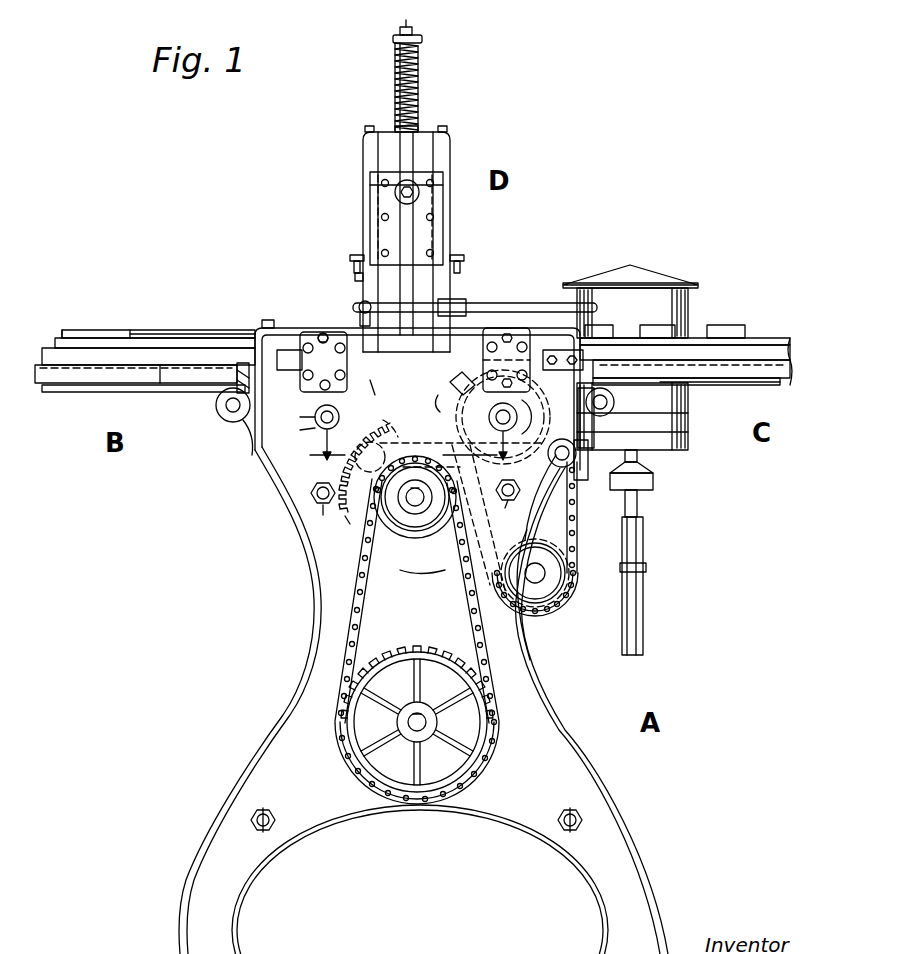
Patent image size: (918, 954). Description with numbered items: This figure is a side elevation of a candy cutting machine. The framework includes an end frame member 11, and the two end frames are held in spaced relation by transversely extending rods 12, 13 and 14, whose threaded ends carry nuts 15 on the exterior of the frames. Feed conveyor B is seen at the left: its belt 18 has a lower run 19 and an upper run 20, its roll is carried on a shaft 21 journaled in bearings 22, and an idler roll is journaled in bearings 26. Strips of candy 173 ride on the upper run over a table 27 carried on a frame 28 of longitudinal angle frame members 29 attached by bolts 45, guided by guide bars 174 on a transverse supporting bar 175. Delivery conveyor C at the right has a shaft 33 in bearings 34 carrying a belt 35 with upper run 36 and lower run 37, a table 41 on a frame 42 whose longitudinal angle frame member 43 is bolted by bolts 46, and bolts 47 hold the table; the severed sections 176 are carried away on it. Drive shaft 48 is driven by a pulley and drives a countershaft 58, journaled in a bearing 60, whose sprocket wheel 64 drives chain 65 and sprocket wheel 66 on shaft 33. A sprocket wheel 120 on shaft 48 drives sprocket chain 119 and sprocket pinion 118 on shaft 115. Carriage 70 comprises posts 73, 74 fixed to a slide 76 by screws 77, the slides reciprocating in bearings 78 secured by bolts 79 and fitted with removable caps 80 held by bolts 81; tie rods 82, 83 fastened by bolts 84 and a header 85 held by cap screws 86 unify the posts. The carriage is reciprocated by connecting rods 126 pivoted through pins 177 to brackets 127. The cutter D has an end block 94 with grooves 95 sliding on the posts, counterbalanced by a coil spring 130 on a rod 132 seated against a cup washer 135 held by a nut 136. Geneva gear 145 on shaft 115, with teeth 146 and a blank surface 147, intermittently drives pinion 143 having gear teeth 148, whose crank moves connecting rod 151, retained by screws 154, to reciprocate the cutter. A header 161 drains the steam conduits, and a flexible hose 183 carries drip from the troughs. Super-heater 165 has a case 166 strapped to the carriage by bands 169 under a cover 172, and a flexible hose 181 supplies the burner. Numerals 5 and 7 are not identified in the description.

The cam 5 is at (437, 405).
The section line 7 is at (408, 457).
The end frame member 11 is at (290, 738).
The transversely extending rod 12 is at (310, 495).
The transversely extending rod 13 is at (507, 501).
The transversely extending rod 14 is at (268, 828).
The nut 15 is at (318, 503).
The belt 18 is at (115, 343).
The lower run of belt 19 is at (60, 388).
The upper run of belt 20 is at (72, 340).
The shaft 21 is at (322, 418).
The bearing 22 is at (320, 425).
The bearing 26 is at (225, 418).
The table 27 is at (160, 355).
The frame 28 is at (92, 378).
The longitudinal angle frame member 29 is at (163, 378).
The shaft 33 is at (500, 420).
The bearing 34 is at (503, 417).
The belt 35 is at (755, 338).
The upper run of belt 36 is at (765, 345).
The lower run of belt 37 is at (700, 385).
The table 41 is at (770, 352).
The frame 42 is at (787, 390).
The longitudinal angle frame member 43 is at (755, 370).
The bolt 45 is at (243, 362).
The bolt 46 is at (582, 362).
The bolt 47 is at (422, 593).
The drive shaft 48 is at (420, 722).
The countershaft 58 is at (533, 580).
The bearing 60 is at (555, 595).
The sprocket wheel 64 is at (562, 578).
The chain 65 is at (575, 540).
The sprocket wheel 66 is at (520, 490).
The carriage 70 is at (450, 168).
The post 73 is at (370, 156).
The post 74 is at (440, 155).
The slide 76 is at (262, 314).
The screw 77 is at (367, 392).
The bearing 78 is at (325, 345).
The bolt 79 is at (321, 333).
The removable cap 80 is at (305, 372).
The bolt 81 is at (336, 344).
The tie rod 82 is at (352, 257).
The tie rod 83 is at (462, 270).
The bolt 84 is at (355, 277).
The header 85 is at (420, 128).
The cap screw 86 is at (368, 126).
The end block 94 is at (440, 224).
The groove 95 is at (376, 228).
The shaft 115 is at (420, 505).
The sprocket pinion 118 is at (405, 520).
The sprocket chain 119 is at (350, 640).
The sprocket wheel 120 is at (430, 655).
The connecting rod 126 is at (566, 505).
The bracket 127 is at (598, 460).
The coil spring 130 is at (418, 70).
The rod 132 is at (395, 58).
The cup washer 135 is at (395, 37).
The nut 136 is at (410, 32).
The pinion 143 is at (388, 417).
The gear 145 is at (352, 515).
The teeth 146 is at (345, 520).
The blank surface 147 is at (449, 449).
The gear teeth 148 is at (346, 417).
The connecting rod 151 is at (408, 250).
The screw 154 is at (402, 192).
The header 161 is at (420, 303).
The super-heater 165 is at (660, 283).
The case 166 is at (680, 305).
The band 169 is at (680, 440).
The cover 172 is at (612, 283).
The strip of candy 173 is at (90, 333).
The guide bar 174 is at (145, 333).
The transverse supporting bar 175 is at (285, 350).
The section 176 is at (716, 326).
The pin 177 is at (570, 462).
The flexible hose 181 is at (643, 618).
The flexible hose 183 is at (475, 392).